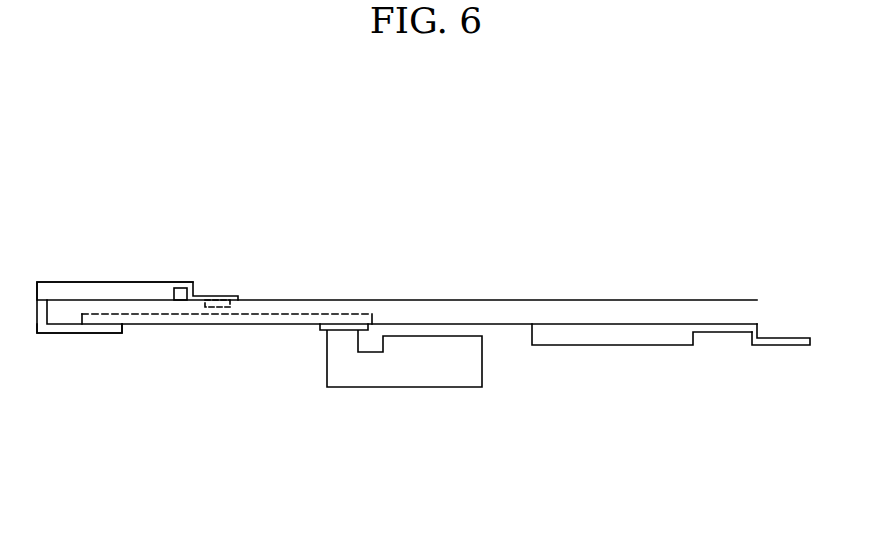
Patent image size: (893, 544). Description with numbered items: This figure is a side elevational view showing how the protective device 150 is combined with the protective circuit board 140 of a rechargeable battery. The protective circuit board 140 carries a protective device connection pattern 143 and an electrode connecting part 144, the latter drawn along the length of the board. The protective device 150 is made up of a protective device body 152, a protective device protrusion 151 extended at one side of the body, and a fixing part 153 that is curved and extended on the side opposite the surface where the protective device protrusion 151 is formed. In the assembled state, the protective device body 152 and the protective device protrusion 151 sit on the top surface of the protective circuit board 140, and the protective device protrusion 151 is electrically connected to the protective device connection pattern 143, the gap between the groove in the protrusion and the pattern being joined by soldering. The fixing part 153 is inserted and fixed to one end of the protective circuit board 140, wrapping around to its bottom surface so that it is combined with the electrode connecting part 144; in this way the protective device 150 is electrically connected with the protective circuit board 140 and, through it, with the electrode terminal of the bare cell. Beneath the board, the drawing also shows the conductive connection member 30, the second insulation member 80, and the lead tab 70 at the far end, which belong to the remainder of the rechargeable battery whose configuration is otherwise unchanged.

The conductive connection member 30 is at (383, 388).
The lead tab 70 is at (765, 346).
The second insulation member 80 is at (612, 346).
The protective circuit board 140 is at (581, 262).
The protective device connection pattern 143 is at (228, 302).
The electrode connecting part 144 is at (196, 325).
The protective device 150 is at (162, 248).
The protective device protrusion 151 is at (210, 296).
The protective device body 152 is at (92, 282).
The fixing part 153 is at (97, 333).